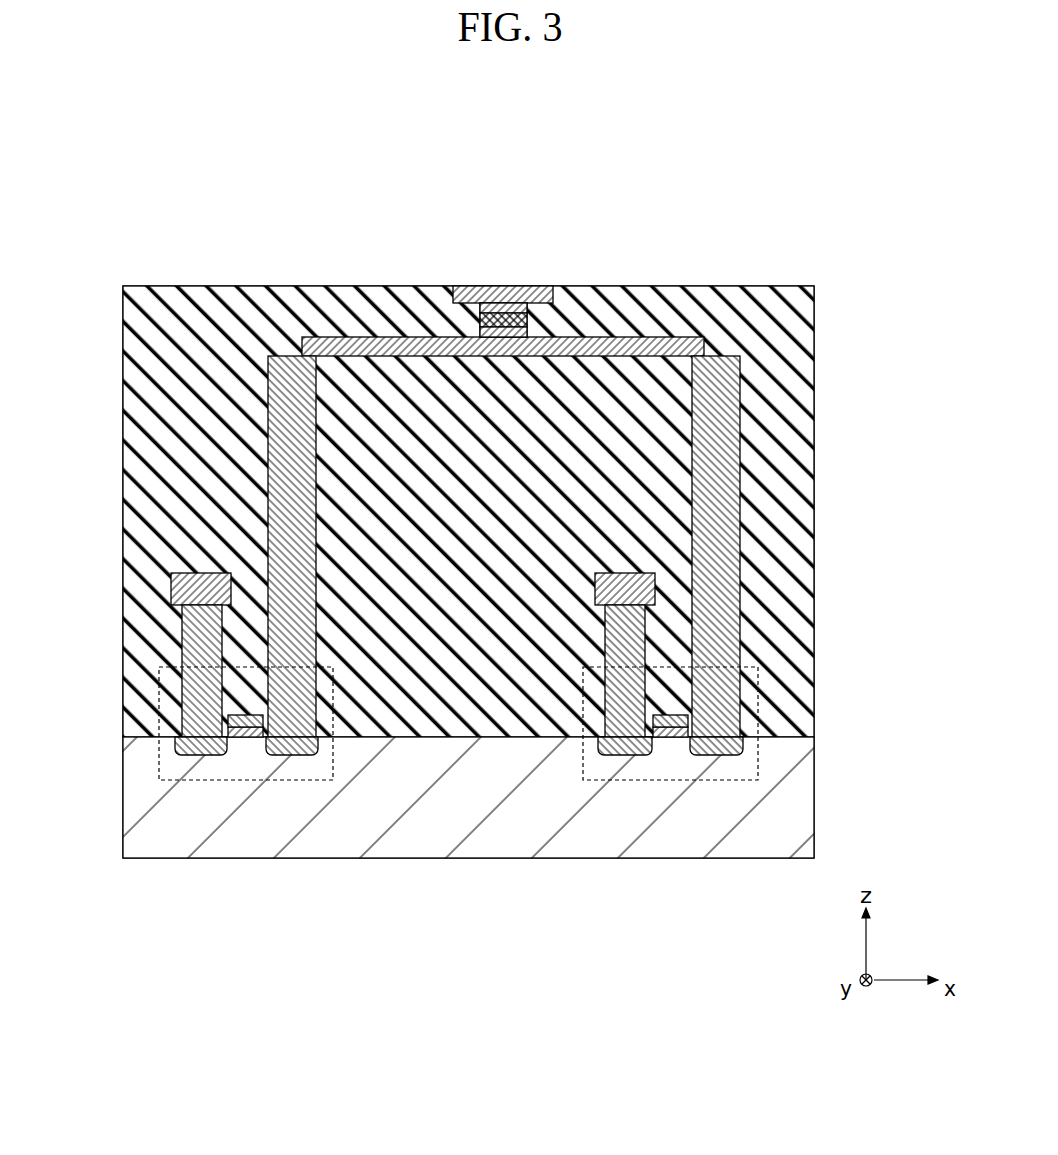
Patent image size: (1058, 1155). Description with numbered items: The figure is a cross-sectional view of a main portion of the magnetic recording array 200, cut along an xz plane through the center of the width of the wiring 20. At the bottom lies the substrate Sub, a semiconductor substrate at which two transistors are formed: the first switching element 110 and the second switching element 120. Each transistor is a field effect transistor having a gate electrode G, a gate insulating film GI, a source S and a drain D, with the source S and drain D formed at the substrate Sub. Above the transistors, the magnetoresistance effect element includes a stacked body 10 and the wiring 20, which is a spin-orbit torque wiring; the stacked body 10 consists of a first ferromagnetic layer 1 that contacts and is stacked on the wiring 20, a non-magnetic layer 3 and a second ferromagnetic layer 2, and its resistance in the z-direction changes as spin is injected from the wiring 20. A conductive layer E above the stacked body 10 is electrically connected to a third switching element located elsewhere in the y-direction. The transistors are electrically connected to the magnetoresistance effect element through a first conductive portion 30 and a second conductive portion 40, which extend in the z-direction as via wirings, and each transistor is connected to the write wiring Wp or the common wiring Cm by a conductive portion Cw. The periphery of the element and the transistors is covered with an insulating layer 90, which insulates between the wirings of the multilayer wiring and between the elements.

The magnetic recording array 200 is at (821, 213).
The insulating layer 90 is at (783, 397).
The substrate Sub is at (780, 790).
The wiring 20 is at (387, 340).
The first conductive portion 30 is at (266, 396).
The second conductive portion 40 is at (723, 458).
The conductive layer E is at (540, 292).
The stacked body 10 is at (545, 185).
The first ferromagnetic layer 1 is at (485, 307).
The non-magnetic layer 3 is at (500, 318).
The second ferromagnetic layer 2 is at (518, 330).
The write wiring Wp is at (171, 580).
The conductive portion Cw is at (182, 660).
The common wiring Cm is at (655, 592).
The first switching element 110 is at (160, 782).
The second switching element 120 is at (584, 782).
The source S is at (193, 758).
The drain D is at (285, 757).
The gate electrode G is at (248, 728).
The gate insulating film GI is at (252, 738).